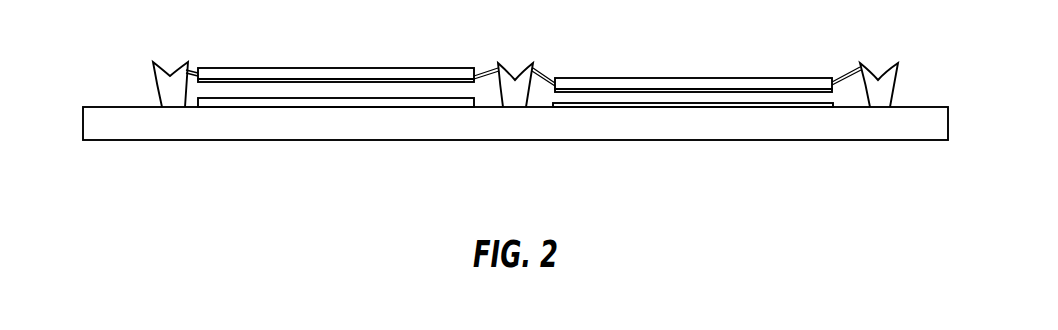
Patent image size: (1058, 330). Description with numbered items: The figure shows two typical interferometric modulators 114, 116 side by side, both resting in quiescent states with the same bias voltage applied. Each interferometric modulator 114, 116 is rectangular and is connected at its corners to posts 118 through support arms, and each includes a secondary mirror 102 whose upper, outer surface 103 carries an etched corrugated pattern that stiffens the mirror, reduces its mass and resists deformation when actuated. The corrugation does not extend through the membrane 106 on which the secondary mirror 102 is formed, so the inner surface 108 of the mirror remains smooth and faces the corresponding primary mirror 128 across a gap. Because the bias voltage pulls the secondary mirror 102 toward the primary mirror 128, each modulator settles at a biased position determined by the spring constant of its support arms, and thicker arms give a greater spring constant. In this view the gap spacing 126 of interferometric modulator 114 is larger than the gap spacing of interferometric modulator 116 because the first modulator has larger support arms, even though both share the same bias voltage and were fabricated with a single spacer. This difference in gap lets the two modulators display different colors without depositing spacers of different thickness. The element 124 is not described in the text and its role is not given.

The secondary mirror 102 is at (712, 78).
The upper (outer) surface 103 is at (572, 73).
The membrane 106 is at (802, 82).
The inner surface 108 is at (737, 95).
The interferometric modulator 114 is at (349, 97).
The interferometric modulator 116 is at (693, 102).
The post 118 is at (156, 89).
The adhesive layer 124 is at (268, 102).
The gap spacing 126 is at (340, 91).
The primary mirror 128 is at (695, 101).